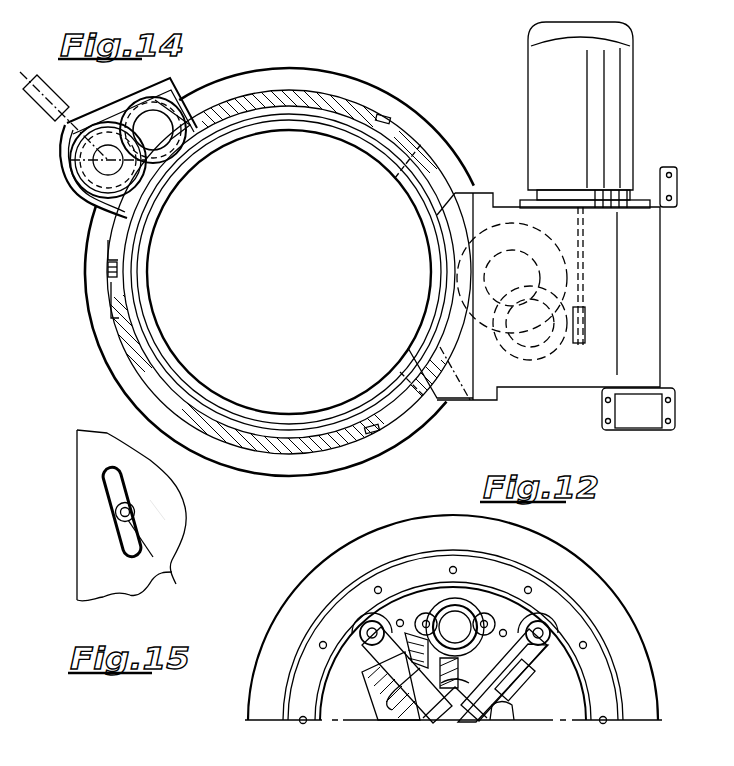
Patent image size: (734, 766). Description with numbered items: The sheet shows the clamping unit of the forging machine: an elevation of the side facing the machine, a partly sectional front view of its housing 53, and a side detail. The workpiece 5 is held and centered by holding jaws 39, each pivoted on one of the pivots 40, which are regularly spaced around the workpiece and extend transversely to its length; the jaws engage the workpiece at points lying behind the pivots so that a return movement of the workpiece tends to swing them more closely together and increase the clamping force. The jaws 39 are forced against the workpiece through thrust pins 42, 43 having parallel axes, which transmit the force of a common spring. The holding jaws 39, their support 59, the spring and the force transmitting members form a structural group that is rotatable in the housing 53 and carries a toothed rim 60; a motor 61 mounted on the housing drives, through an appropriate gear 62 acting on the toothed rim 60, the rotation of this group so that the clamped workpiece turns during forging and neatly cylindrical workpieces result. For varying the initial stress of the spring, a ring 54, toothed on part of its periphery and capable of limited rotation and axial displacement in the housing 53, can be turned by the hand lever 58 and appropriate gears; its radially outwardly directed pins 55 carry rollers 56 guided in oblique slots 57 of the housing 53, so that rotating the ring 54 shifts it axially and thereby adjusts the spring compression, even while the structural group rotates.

In FIG. 12, the workpiece 5 is at (458, 717).
In FIG. 12, the holding jaw 39 is at (432, 713).
In FIG. 12, the pivot 40 is at (390, 707).
In FIG. 12, the thrust pin 42 is at (549, 655).
In FIG. 12, the thrust pin 43 is at (357, 657).
In FIG. 14, the housing 53 is at (127, 346).
In FIG. 15, the housing 53 is at (170, 552).
In FIG. 12, the housing 53 is at (572, 580).
In FIG. 14, the ring 54 is at (155, 370).
In FIG. 15, the pin 55 is at (133, 515).
In FIG. 14, the roller 56 is at (108, 270).
In FIG. 15, the roller 56 is at (176, 584).
In FIG. 14, the oblique slot 57 is at (110, 305).
In FIG. 15, the oblique slot 57 is at (120, 492).
In FIG. 14, the hand lever 58 is at (62, 121).
In FIG. 12, the support 59 is at (547, 707).
In FIG. 14, the toothed rim 60 is at (470, 393).
In FIG. 14, the motor 61 is at (548, 90).
In FIG. 14, the gear 62 is at (537, 347).